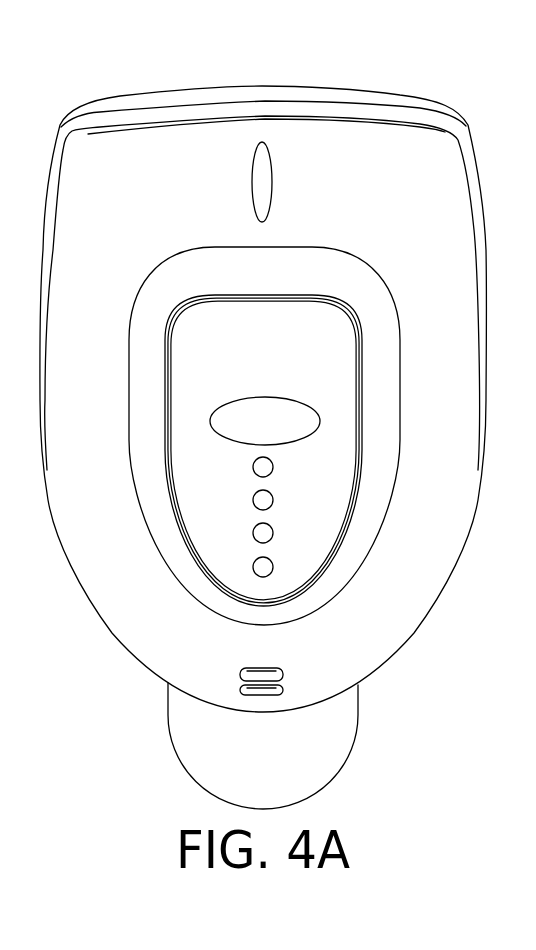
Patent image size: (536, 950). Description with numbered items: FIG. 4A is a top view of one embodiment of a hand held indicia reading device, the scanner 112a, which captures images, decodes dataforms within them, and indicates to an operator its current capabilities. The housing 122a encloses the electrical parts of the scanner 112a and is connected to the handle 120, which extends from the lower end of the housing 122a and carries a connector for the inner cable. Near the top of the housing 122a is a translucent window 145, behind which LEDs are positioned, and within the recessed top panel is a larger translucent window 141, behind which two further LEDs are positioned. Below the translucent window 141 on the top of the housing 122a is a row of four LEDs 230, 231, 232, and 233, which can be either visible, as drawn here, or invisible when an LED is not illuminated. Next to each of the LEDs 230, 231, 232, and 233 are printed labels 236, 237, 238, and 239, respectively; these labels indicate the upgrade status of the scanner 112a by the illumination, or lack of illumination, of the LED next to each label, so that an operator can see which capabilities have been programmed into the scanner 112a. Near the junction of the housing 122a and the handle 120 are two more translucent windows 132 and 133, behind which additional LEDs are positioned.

The scanner 112a is at (143, 68).
The housing 122a is at (403, 648).
The translucent window 145 is at (251, 187).
The translucent window 141 is at (265, 398).
The LED 233 is at (256, 461).
The LED 232 is at (256, 495).
The LED 231 is at (256, 527).
The LED 230 is at (255, 563).
The printed label 239 is at (293, 464).
The printed label 238 is at (293, 497).
The printed label 237 is at (293, 529).
The printed label 236 is at (289, 577).
The translucent window 133 is at (240, 673).
The translucent window 132 is at (285, 689).
The handle 120 is at (165, 713).